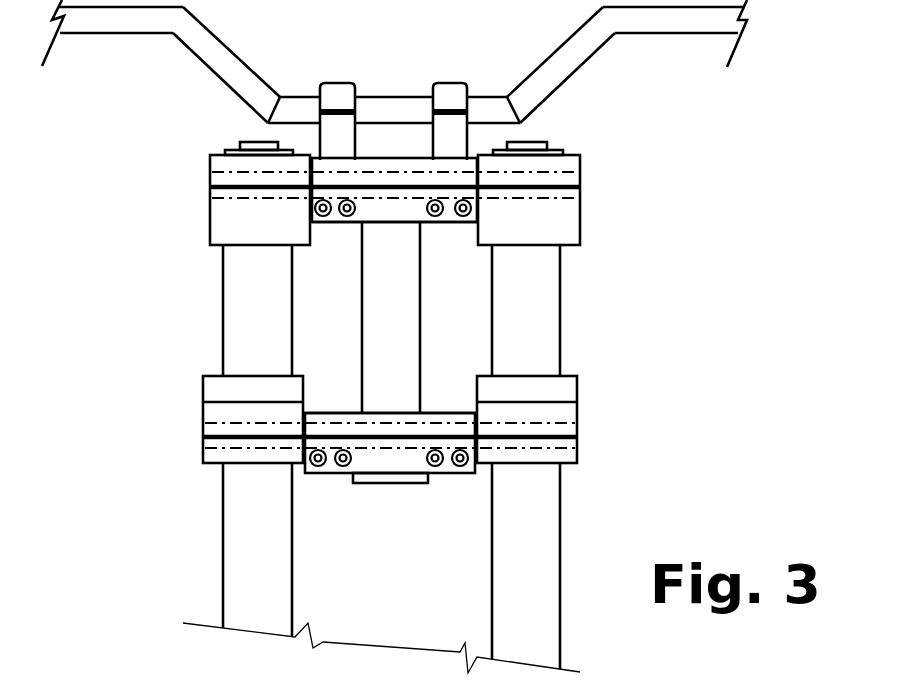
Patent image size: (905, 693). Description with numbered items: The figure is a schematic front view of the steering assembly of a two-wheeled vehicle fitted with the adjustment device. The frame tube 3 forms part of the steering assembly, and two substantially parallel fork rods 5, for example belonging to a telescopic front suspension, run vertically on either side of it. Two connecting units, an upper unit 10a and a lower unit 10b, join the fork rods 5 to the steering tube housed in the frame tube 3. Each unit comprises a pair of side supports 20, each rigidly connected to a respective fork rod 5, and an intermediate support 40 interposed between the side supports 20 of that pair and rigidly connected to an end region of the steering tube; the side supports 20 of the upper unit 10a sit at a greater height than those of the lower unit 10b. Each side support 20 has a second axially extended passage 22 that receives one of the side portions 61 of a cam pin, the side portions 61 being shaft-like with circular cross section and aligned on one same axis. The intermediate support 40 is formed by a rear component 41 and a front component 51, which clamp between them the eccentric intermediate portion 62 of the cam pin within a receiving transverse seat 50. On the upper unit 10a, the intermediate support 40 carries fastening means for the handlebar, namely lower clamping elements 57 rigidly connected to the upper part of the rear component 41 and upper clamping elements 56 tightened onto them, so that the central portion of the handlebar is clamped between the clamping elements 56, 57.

The frame tube 3 is at (372, 307).
The fork rods 5 is at (270, 588).
The upper connecting unit 10a is at (630, 255).
The lower connecting unit 10b is at (598, 350).
The side support 20 is at (200, 220).
The second axially extended passage 22 is at (398, 328).
The side portions of the cam pin 61 is at (215, 182).
The intermediate support 40 is at (332, 388).
The rear component 41 is at (335, 158).
The receiving transverse seat 50 is at (391, 310).
The intermediate portion of the cam pin 62 is at (400, 188).
The front component 51 is at (337, 222).
The upper clamping elements 56 is at (330, 92).
The lower clamping elements 57 is at (450, 138).